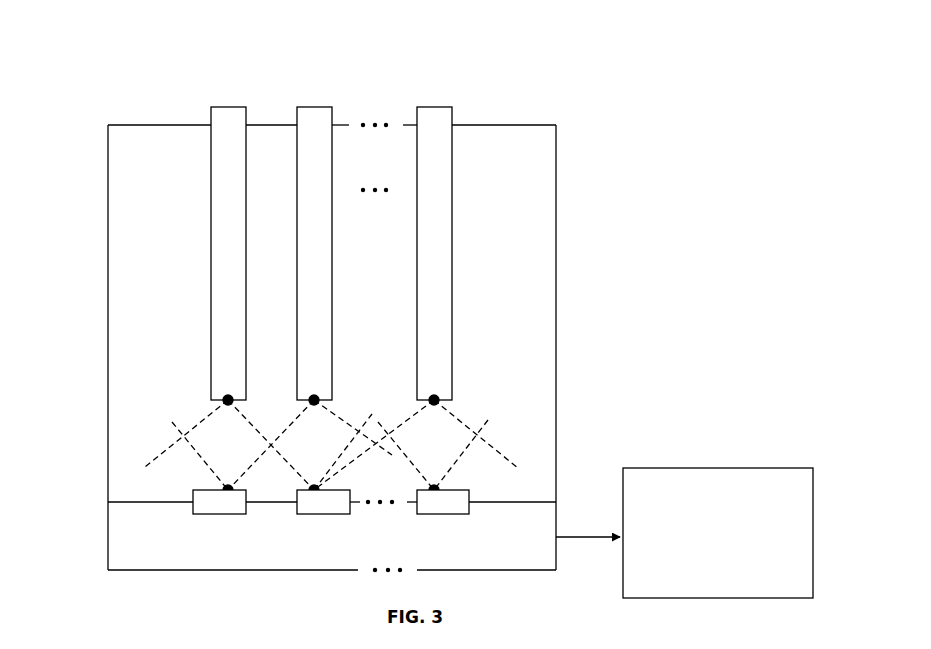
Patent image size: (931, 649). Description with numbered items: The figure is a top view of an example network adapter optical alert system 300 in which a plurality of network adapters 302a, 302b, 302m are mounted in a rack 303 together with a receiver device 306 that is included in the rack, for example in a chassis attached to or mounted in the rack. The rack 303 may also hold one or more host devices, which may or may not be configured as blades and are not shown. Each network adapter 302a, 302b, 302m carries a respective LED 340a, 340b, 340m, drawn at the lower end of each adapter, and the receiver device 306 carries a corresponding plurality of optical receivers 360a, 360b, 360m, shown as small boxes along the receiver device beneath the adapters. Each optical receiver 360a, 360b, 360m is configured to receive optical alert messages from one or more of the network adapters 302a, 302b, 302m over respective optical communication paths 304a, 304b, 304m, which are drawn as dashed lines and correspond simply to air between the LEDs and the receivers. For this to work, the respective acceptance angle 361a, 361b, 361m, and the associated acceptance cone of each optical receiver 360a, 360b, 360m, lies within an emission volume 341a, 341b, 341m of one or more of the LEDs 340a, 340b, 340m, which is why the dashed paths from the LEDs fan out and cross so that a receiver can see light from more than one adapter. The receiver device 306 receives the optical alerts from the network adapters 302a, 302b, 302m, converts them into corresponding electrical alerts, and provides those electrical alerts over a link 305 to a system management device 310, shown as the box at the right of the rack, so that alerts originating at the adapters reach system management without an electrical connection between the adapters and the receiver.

The network adapter optical alert system 300 is at (73, 50).
The network adapter 302a is at (227, 107).
The network adapter 302b is at (313, 107).
The network adapter 302m is at (423, 107).
The rack 303 is at (560, 194).
The optical communication path 304a is at (208, 432).
The optical communication path 304b is at (293, 428).
The optical communication path 304m is at (417, 432).
The link 305 is at (570, 532).
The receiver device 306 is at (365, 550).
The system management device 310 is at (702, 584).
The LED 340a is at (226, 397).
The LED 340b is at (312, 397).
The LED 340m is at (436, 397).
The emission volume 341a is at (163, 453).
The emission volume 341b is at (342, 415).
The emission volume 341m is at (525, 450).
The optical receiver 360a is at (207, 516).
The optical receiver 360b is at (303, 516).
The optical receiver 360m is at (452, 516).
The acceptance angle 361a is at (197, 455).
The acceptance angle 361b is at (326, 463).
The acceptance angle 361m is at (465, 452).